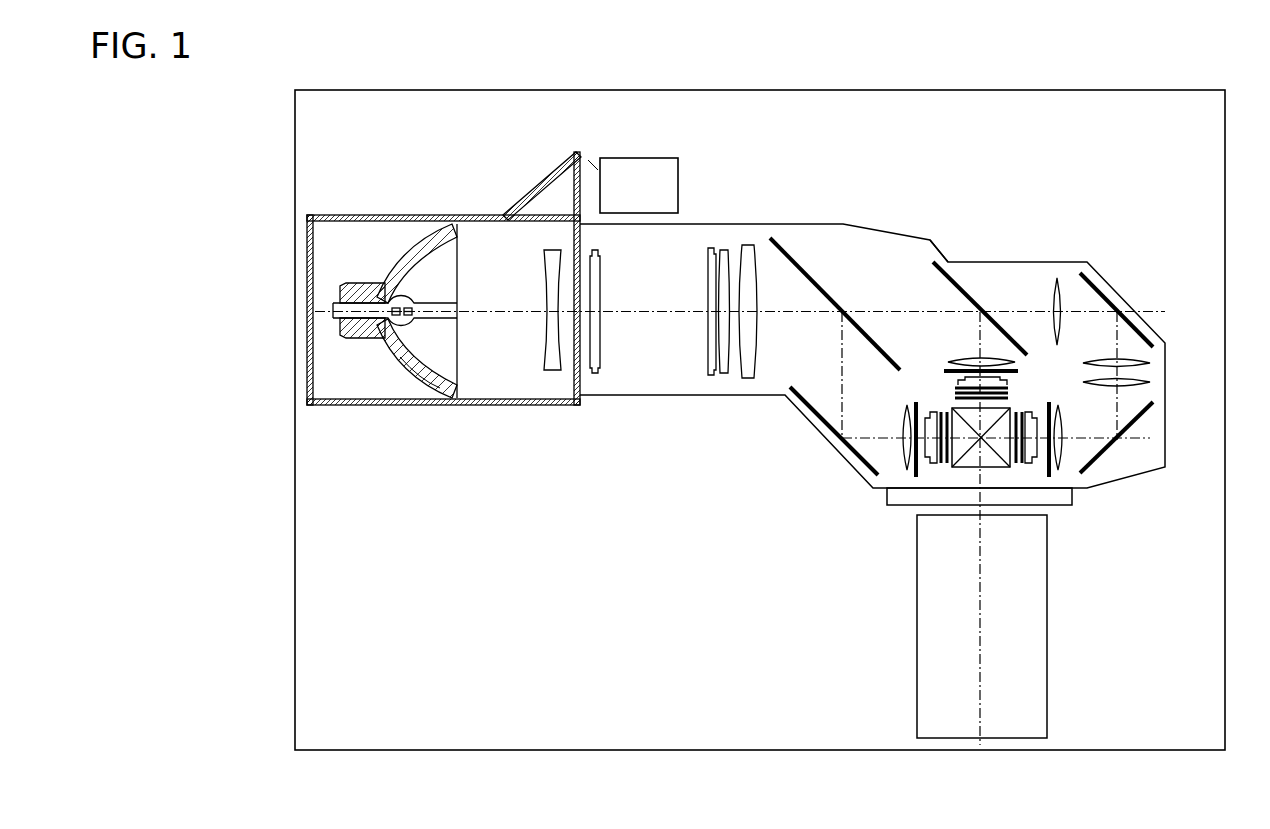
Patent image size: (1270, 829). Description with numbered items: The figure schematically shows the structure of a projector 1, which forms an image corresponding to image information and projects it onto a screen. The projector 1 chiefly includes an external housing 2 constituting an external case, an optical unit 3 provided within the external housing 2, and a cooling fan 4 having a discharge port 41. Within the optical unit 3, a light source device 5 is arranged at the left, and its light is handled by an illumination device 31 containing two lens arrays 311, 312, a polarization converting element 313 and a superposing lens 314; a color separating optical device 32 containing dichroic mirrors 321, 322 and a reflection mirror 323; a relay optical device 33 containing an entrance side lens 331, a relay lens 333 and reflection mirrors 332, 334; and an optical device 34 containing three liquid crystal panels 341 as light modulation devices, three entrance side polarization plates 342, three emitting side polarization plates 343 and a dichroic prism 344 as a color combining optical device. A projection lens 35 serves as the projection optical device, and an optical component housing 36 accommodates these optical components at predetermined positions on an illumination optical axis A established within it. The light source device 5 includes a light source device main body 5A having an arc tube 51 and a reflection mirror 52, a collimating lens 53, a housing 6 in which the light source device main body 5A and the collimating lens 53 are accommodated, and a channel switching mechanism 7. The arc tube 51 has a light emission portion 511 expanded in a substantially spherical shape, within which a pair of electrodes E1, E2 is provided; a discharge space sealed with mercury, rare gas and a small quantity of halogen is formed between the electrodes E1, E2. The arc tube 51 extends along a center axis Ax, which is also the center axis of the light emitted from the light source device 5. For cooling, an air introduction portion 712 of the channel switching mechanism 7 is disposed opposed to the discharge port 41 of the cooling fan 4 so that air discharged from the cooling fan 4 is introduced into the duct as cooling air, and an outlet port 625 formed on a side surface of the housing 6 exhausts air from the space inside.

The projector 1 is at (344, 81).
The external housing 2 is at (1043, 90).
The optical unit 3 is at (1110, 203).
The cooling fan 4 is at (680, 185).
The discharge port 41 is at (592, 166).
The light source device 5 is at (548, 510).
The light source device main body 5A is at (475, 472).
The arc tube 51 is at (456, 366).
The light emission portion 511 is at (437, 386).
The reflection mirror 52 is at (404, 368).
The collimating lens 53 is at (553, 372).
The housing 6 is at (490, 406).
The outlet port 625 is at (510, 406).
The channel switching mechanism 7 is at (525, 182).
The air introduction portion 712 is at (578, 153).
The illumination device 31 is at (796, 455).
The lens array 311 is at (596, 374).
The lens array 312 is at (709, 375).
The polarization converting element 313 is at (719, 377).
The superposing lens 314 is at (748, 378).
The color separating optical device 32 is at (889, 249).
The dichroic mirror 321 is at (802, 266).
The dichroic mirror 322 is at (965, 290).
The reflection mirror 323 is at (864, 463).
The relay optical device 33 is at (1163, 312).
The entrance side lens 331 is at (1057, 277).
The reflection mirror 332 is at (1085, 277).
The relay lens 333 is at (1151, 381).
The reflection mirror 334 is at (1141, 417).
The optical device 34 is at (928, 341).
The liquid crystal panel 341 is at (924, 410).
The entrance side polarization plate 342 is at (950, 361).
The emitting side polarization plate 343 is at (1012, 403).
The dichroic prism 344 is at (990, 462).
The projection lens 35 is at (1040, 634).
The optical component housing 36 is at (942, 250).
The center axis Ax is at (503, 306).
The illumination optical axis A is at (665, 308).
The electrode E1 is at (396, 308).
The electrode E2 is at (409, 308).